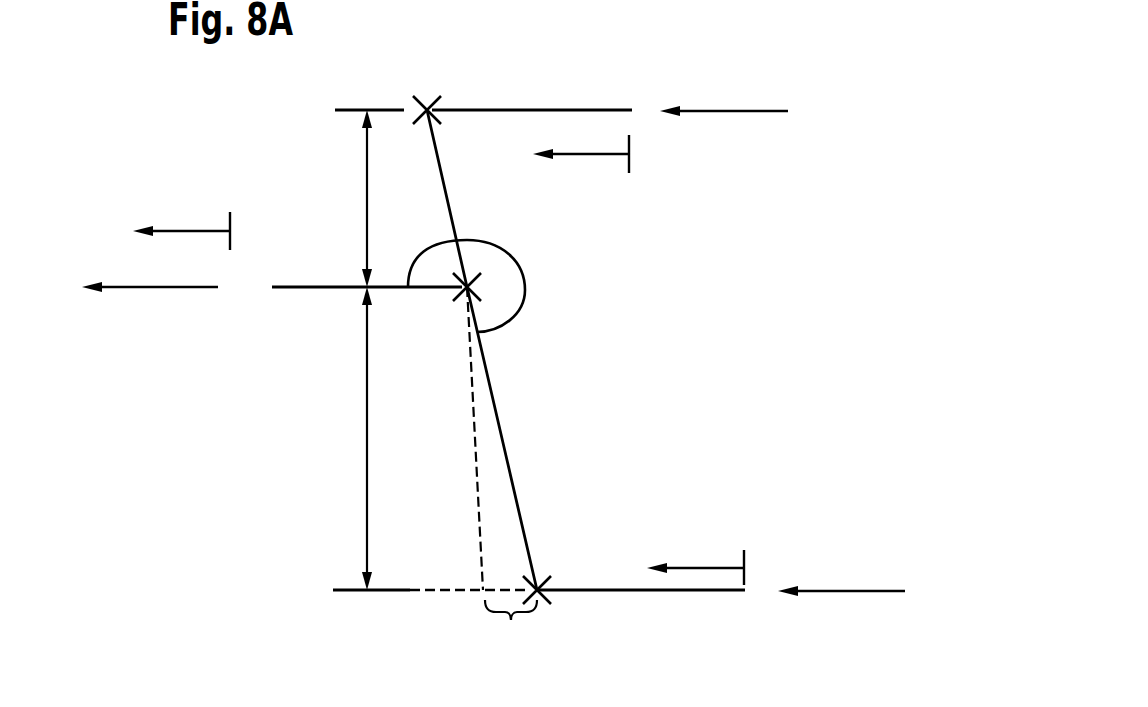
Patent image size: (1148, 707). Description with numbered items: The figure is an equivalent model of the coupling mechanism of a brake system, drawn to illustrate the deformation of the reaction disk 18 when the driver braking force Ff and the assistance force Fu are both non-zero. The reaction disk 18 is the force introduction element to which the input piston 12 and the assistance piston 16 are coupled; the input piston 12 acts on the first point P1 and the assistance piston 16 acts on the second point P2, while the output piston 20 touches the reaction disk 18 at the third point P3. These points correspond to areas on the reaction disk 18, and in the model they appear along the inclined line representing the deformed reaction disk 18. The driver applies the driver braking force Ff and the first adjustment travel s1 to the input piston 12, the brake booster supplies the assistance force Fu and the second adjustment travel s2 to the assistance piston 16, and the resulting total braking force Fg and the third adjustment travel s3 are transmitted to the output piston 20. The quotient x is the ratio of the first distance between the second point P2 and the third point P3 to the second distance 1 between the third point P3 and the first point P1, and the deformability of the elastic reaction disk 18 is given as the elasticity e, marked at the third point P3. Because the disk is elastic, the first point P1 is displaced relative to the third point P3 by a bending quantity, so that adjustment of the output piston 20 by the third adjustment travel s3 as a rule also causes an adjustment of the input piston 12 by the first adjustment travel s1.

The input piston 12 is at (642, 592).
The assistance piston 16 is at (543, 108).
The reaction disk 18 is at (505, 450).
The output piston 20 is at (298, 290).
The first point P1 is at (545, 580).
The second point P2 is at (428, 95).
The third point P3 is at (468, 287).
The elasticity e is at (527, 288).
The quotient x is at (366, 198).
The total length 1 is at (366, 433).
The first adjustment travel s1 is at (703, 567).
The second adjustment travel s2 is at (590, 156).
The third adjustment travel s3 is at (186, 230).
The assistance force Fu is at (735, 110).
The total braking force Fg is at (141, 290).
The driver braking force Ff is at (857, 590).